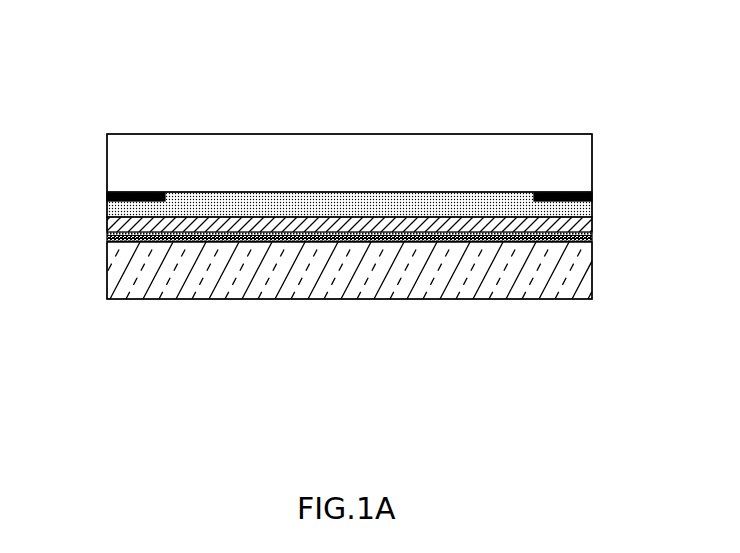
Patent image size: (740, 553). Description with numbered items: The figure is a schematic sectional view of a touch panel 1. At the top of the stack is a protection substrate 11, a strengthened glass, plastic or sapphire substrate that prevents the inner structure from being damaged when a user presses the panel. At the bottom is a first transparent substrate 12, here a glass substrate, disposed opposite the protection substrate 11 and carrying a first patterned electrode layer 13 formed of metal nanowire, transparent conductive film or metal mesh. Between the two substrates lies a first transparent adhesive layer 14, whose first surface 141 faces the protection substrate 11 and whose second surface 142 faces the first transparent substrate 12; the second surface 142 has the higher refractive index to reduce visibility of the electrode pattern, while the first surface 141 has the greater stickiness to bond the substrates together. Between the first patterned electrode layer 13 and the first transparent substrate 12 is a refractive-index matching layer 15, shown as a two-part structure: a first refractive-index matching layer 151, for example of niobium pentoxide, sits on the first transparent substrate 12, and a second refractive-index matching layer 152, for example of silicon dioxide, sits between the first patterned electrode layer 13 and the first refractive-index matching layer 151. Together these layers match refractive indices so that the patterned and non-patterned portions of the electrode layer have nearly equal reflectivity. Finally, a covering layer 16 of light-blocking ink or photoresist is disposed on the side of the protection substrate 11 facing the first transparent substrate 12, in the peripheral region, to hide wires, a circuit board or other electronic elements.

The touch panel 1 is at (203, 72).
The protection substrate 11 is at (588, 155).
The first transparent substrate 12 is at (588, 290).
The first patterned electrode layer 13 is at (590, 240).
The first transparent adhesive layer 14 is at (390, 207).
The first surface 141 is at (590, 193).
The second surface 142 is at (590, 228).
The refractive-index matching layer 15 is at (336, 238).
The first refractive-index matching layer 151 is at (331, 259).
The second refractive-index matching layer 152 is at (107, 233).
The covering layer 16 is at (147, 193).